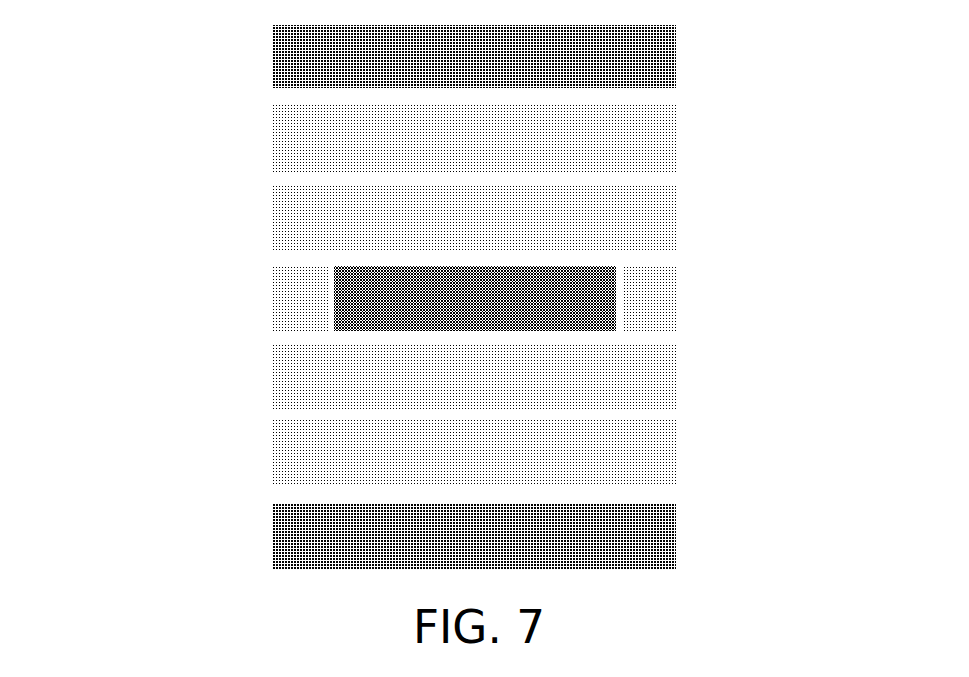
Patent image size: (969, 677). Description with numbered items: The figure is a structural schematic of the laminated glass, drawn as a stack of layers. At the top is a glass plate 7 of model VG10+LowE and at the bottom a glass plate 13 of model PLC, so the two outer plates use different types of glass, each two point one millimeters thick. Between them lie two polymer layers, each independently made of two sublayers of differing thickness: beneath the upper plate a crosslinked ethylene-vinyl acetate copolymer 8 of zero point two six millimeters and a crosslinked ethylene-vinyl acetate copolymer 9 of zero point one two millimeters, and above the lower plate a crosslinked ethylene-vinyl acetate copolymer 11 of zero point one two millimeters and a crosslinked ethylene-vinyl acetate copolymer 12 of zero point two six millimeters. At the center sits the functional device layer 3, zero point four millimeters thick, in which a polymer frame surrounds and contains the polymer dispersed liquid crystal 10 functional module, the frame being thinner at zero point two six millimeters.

The functional device layer 3 is at (475, 298).
The glass plate 7 is at (676, 56).
The crosslinked ethylene-vinyl acetate copolymer 8 is at (676, 139).
The crosslinked ethylene-vinyl acetate copolymer 9 is at (676, 218).
The polymer dispersed liquid crystal 10 is at (272, 298).
The crosslinked ethylene-vinyl acetate copolymer 11 is at (676, 375).
The crosslinked ethylene-vinyl acetate copolymer 12 is at (676, 457).
The glass plate 13 is at (676, 537).